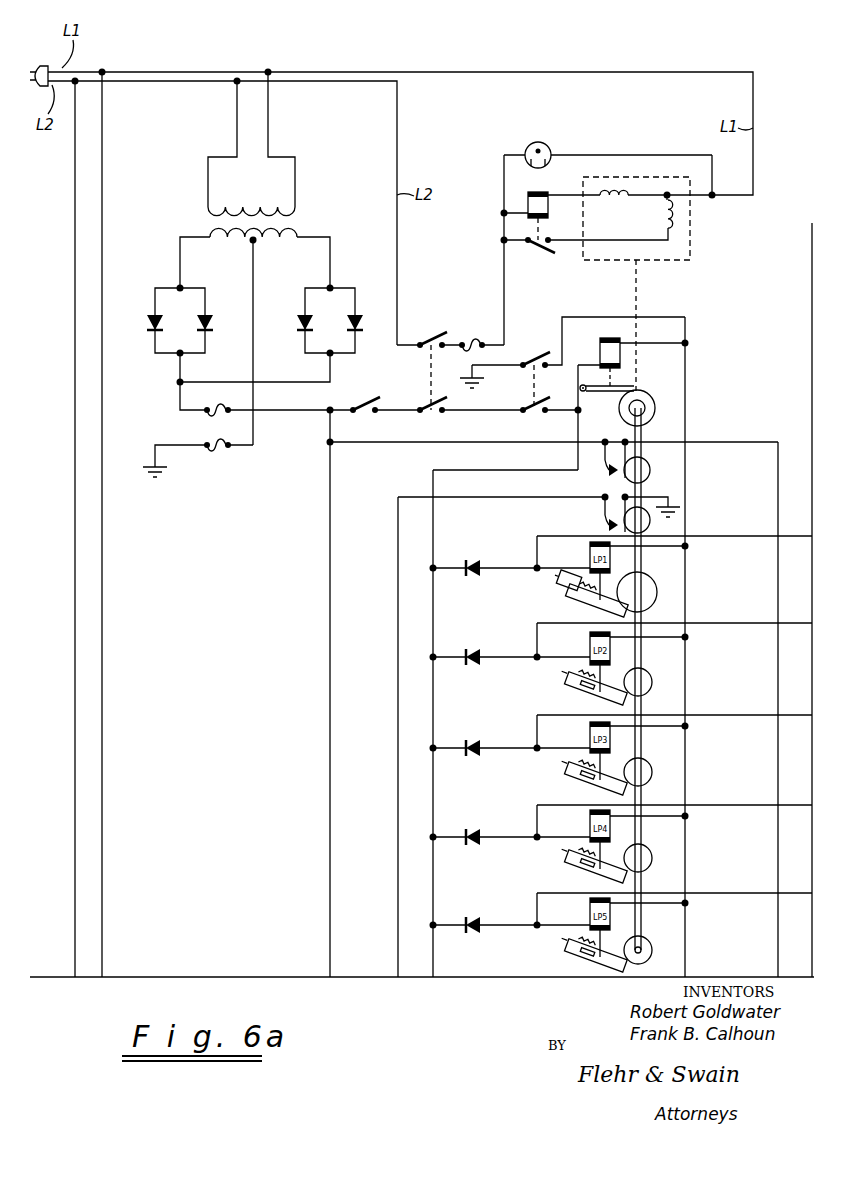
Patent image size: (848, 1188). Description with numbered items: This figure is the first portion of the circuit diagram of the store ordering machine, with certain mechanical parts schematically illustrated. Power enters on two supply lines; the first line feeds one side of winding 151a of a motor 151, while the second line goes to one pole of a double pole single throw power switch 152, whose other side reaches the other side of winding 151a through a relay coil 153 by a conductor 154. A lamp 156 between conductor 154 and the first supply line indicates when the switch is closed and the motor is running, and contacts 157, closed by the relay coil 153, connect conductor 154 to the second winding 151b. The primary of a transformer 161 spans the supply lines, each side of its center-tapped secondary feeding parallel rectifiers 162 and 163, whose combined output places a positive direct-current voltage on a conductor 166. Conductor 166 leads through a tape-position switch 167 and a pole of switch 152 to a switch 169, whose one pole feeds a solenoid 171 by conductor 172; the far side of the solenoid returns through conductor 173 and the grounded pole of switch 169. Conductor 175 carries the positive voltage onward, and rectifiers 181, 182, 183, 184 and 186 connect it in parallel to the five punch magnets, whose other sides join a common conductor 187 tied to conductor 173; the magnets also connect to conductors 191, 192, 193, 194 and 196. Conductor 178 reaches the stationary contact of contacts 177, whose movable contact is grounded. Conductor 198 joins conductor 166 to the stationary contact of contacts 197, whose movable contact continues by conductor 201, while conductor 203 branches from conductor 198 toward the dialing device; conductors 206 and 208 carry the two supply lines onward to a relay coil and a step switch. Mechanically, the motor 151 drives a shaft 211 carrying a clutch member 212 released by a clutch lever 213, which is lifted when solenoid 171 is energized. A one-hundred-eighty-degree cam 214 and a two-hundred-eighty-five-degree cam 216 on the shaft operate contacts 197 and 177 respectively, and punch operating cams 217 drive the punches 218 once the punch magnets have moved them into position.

The motor 151 is at (667, 209).
The winding of the motor 151a is at (616, 192).
The winding of the motor 151b is at (685, 238).
The double pole single throw power switch 152 is at (432, 335).
The relay coil 153 is at (544, 190).
The conductor 154 is at (504, 298).
The lamp 156 is at (538, 142).
The contacts 157 is at (536, 253).
The transformer 161 is at (292, 231).
The rectifier 162 is at (148, 315).
The rectifier 163 is at (212, 315).
The conductor 166 is at (270, 412).
The switch 167 is at (368, 403).
The switch 169 is at (538, 376).
The solenoid 171 is at (600, 339).
The conductor 172 is at (566, 405).
The conductor 173 is at (628, 338).
The conductor 175 is at (556, 468).
The contacts 177 is at (603, 520).
The conductor 178 is at (556, 495).
The rectifier 181 is at (472, 559).
The rectifier 182 is at (472, 648).
The rectifier 183 is at (472, 739).
The rectifier 184 is at (472, 828).
The rectifier 186 is at (472, 916).
The conductor 187 is at (699, 963).
The conductor 191 is at (792, 532).
The conductor 192 is at (792, 620).
The conductor 193 is at (792, 712).
The conductor 194 is at (792, 802).
The conductor 196 is at (792, 890).
The contacts 197 is at (606, 462).
The conductor 198 is at (330, 438).
The conductor 201 is at (772, 442).
The conductor 203 is at (330, 963).
The conductor 206 is at (102, 963).
The conductor 208 is at (75, 963).
The shaft 211 is at (642, 655).
The clutch member 212 is at (650, 396).
The clutch lever 213 is at (588, 392).
The 180° cam 214 is at (648, 476).
The 285° cam 216 is at (648, 528).
The punch operating cams 217 is at (656, 584).
The punches 218 is at (592, 603).